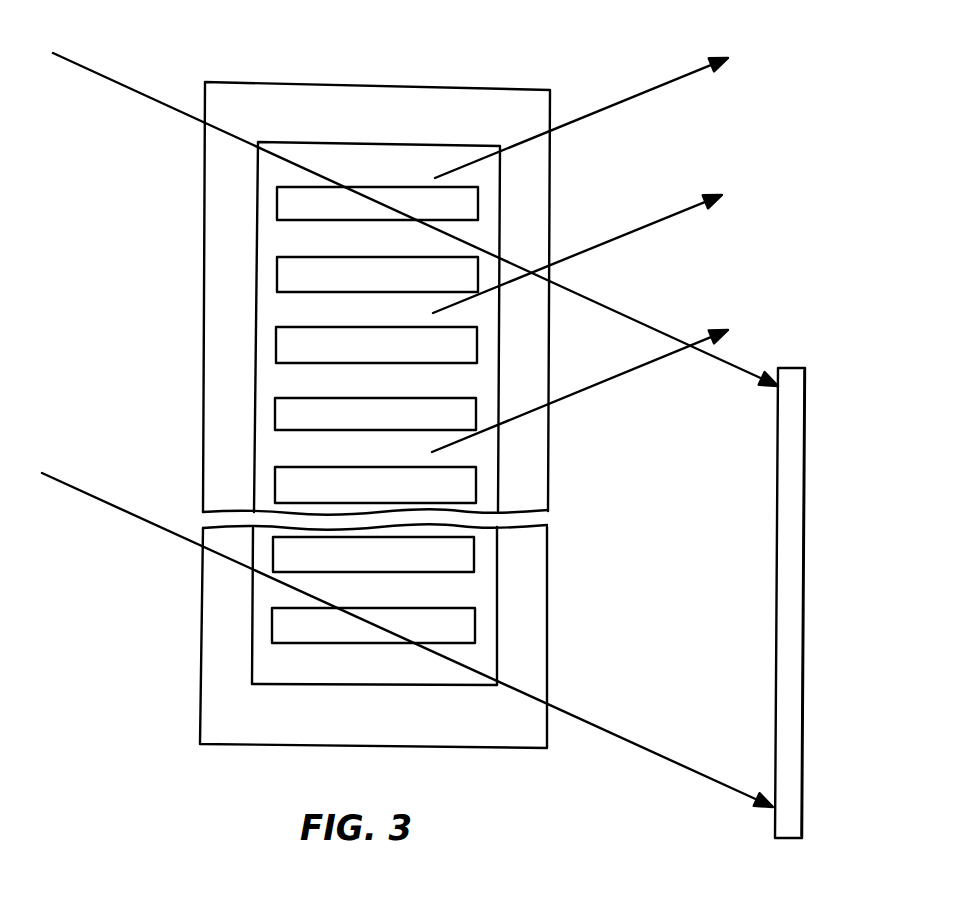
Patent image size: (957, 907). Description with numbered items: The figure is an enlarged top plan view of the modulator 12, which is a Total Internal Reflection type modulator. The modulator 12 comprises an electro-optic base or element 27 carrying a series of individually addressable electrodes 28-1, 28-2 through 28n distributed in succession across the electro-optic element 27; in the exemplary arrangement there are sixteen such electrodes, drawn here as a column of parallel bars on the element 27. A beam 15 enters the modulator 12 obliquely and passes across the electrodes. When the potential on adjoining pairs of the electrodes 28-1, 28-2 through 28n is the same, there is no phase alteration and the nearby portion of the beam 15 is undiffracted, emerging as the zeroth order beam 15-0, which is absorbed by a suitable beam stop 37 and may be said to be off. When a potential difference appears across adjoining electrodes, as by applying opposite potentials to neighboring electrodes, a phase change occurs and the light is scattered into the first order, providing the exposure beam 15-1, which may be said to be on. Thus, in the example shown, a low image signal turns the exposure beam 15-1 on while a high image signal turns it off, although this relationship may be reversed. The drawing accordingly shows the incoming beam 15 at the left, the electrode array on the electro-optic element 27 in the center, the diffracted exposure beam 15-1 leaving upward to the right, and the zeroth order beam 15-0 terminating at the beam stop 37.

The modulator 12 is at (122, 396).
The electro-optic element 27 is at (308, 668).
The electrode 28-1 is at (478, 205).
The electrode 28-2 is at (275, 282).
The electrode 28n is at (475, 630).
The beam 15 is at (94, 70).
The exposure beam 15-1 is at (616, 103).
The zeroth order beam 15-0 is at (620, 737).
The beam stop 37 is at (777, 582).